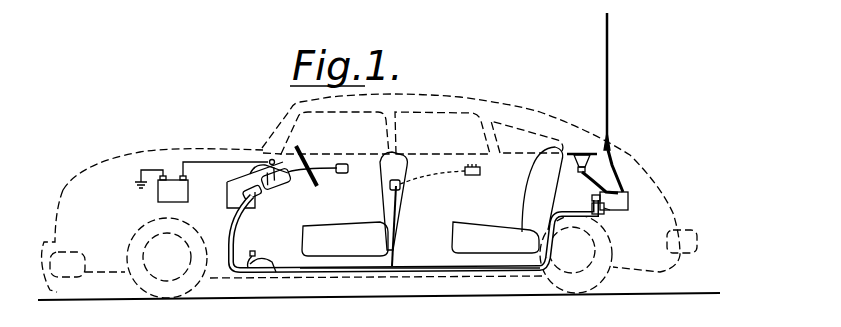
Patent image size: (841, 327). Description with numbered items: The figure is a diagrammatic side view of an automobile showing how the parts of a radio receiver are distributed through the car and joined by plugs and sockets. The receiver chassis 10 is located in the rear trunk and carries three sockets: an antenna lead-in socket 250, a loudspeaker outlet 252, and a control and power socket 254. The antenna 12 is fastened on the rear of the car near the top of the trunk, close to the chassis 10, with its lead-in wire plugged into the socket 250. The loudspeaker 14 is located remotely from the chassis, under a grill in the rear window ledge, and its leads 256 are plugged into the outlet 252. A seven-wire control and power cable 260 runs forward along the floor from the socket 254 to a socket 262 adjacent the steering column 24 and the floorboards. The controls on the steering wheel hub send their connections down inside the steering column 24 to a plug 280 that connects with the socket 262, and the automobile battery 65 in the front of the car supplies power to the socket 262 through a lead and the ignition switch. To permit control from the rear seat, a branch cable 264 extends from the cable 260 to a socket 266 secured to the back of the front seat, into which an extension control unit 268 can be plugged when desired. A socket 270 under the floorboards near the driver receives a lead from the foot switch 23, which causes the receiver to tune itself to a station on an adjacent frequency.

The receiver chassis 10 is at (628, 200).
The antenna 12 is at (617, 82).
The loudspeaker 14 is at (574, 154).
The foot switch 23 is at (263, 243).
The steering column 24 is at (278, 178).
The automobile battery 65 is at (188, 199).
The antenna lead-in socket 250 is at (630, 192).
The loudspeaker outlet 252 is at (592, 198).
The control and power socket 254 is at (606, 212).
The loudspeaker leads 256 is at (584, 169).
The control and power cable 260 is at (402, 270).
The socket 262 is at (257, 207).
The branch cable 264 is at (397, 236).
The socket 266 is at (402, 187).
The extension control unit 268 is at (342, 174).
The socket 270 is at (274, 277).
The plug 280 is at (266, 188).